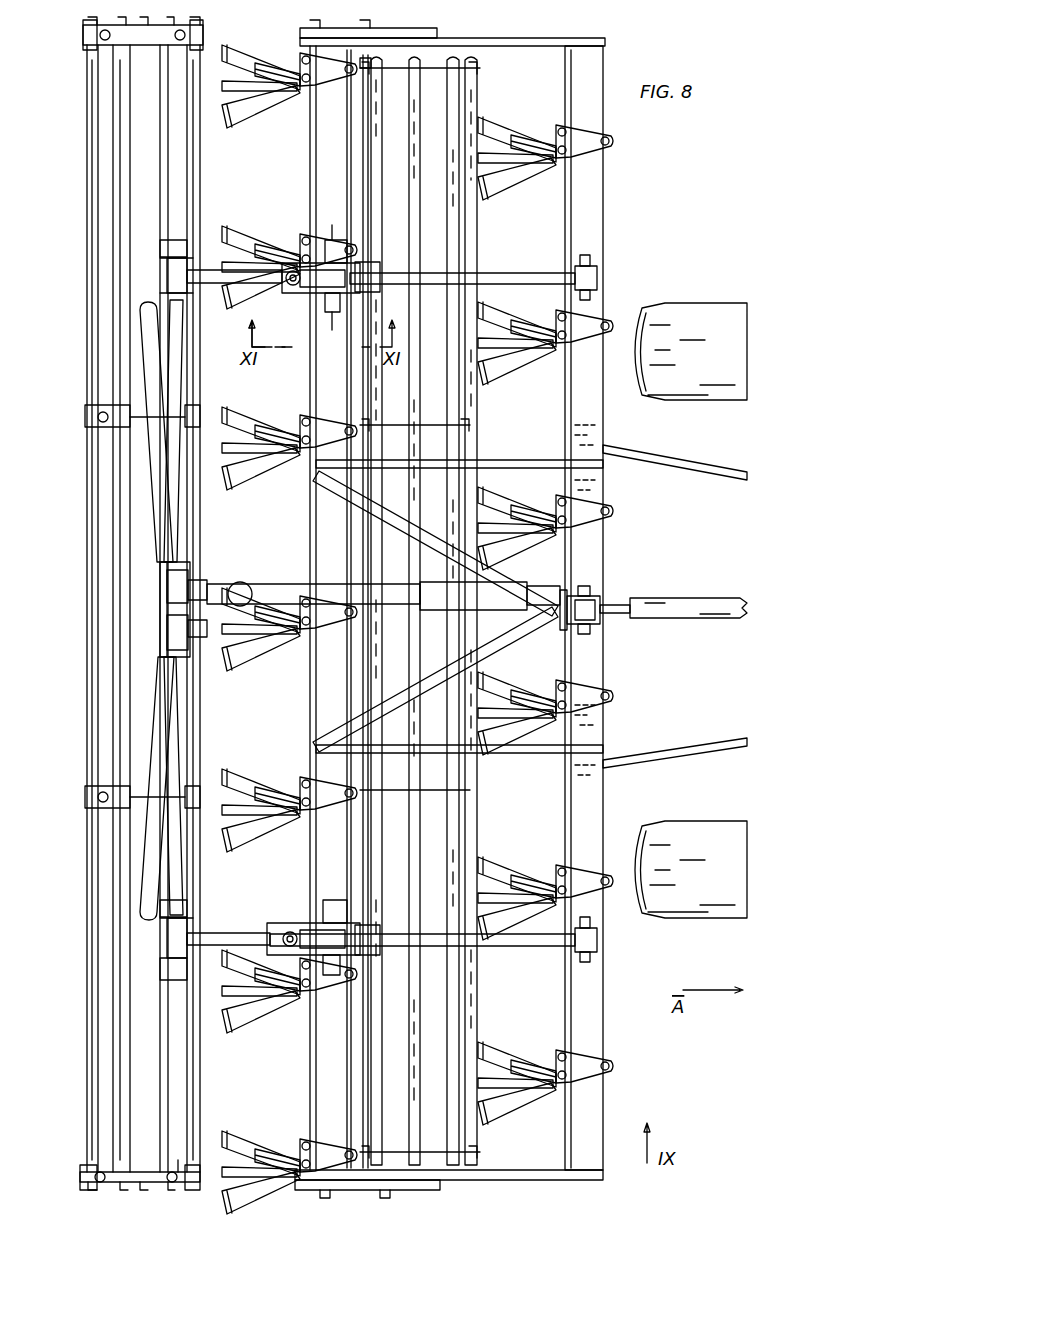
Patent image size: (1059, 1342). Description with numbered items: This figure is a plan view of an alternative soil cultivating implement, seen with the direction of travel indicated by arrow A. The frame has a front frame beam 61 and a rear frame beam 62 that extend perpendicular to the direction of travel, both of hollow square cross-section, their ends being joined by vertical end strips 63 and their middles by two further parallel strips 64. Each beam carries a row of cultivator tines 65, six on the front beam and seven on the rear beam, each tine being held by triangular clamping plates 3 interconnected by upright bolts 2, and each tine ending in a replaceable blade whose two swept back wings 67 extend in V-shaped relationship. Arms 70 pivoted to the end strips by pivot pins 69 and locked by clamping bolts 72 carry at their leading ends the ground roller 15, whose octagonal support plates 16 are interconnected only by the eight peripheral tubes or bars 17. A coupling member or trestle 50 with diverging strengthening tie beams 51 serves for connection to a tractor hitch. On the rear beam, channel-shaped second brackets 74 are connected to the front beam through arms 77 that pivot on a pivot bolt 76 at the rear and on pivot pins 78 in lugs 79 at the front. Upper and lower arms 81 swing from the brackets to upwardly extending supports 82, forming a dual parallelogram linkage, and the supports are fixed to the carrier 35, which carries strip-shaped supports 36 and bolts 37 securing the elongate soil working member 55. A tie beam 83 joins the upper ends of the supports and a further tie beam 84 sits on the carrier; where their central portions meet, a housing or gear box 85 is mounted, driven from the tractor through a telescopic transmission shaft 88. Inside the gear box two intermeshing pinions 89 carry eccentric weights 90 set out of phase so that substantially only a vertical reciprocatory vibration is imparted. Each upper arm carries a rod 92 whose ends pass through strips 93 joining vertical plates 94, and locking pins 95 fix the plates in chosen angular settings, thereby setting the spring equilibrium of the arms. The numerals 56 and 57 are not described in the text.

The upright bolts 2 is at (588, 158).
The clamping plates 3 is at (325, 80).
The ground roller 15 is at (493, 214).
The support plates 16 is at (387, 74).
The tubes or bars 17 is at (427, 1004).
The carrier 35 is at (175, 168).
The strip-shaped supports 36 is at (120, 1172).
The bolts 37 is at (187, 1168).
The coupling member or trestle 50 is at (603, 655).
The strengthening tie beams 51 is at (528, 606).
The elongate soil working member 55 is at (86, 202).
The clamp 56 is at (76, 46).
The frame tube 57 is at (100, 950).
The front frame beam 61 is at (603, 210).
The rear frame beam 62 is at (310, 378).
The end strips 63 is at (540, 45).
The parallel strips 64 is at (518, 465).
The cultivator tines 65 is at (296, 98).
The swept back wings 67 is at (235, 222).
The pivot pins 69 is at (351, 1195).
The arms 70 is at (300, 33).
The clamping bolts 72 is at (381, 1195).
The second bracket 74 is at (333, 312).
The pivot bolt 76 is at (365, 257).
The arms 77 is at (519, 275).
The pivot pins 78 is at (585, 255).
The lugs 79 is at (598, 278).
The upper and lower arms 81 is at (220, 290).
The upwardly extending supports 82 is at (150, 260).
The tie beam 83 is at (176, 512).
The tie beam 84 is at (160, 487).
The housing or gear box 85 is at (191, 573).
The telescopic transmission shaft 88 is at (300, 590).
The pinions 89 is at (204, 575).
The eccentric weights 90 is at (175, 630).
The rod 92 is at (290, 286).
The strips 93 is at (285, 290).
The vertical plates 94 is at (288, 295).
The locking pins 95 is at (290, 252).